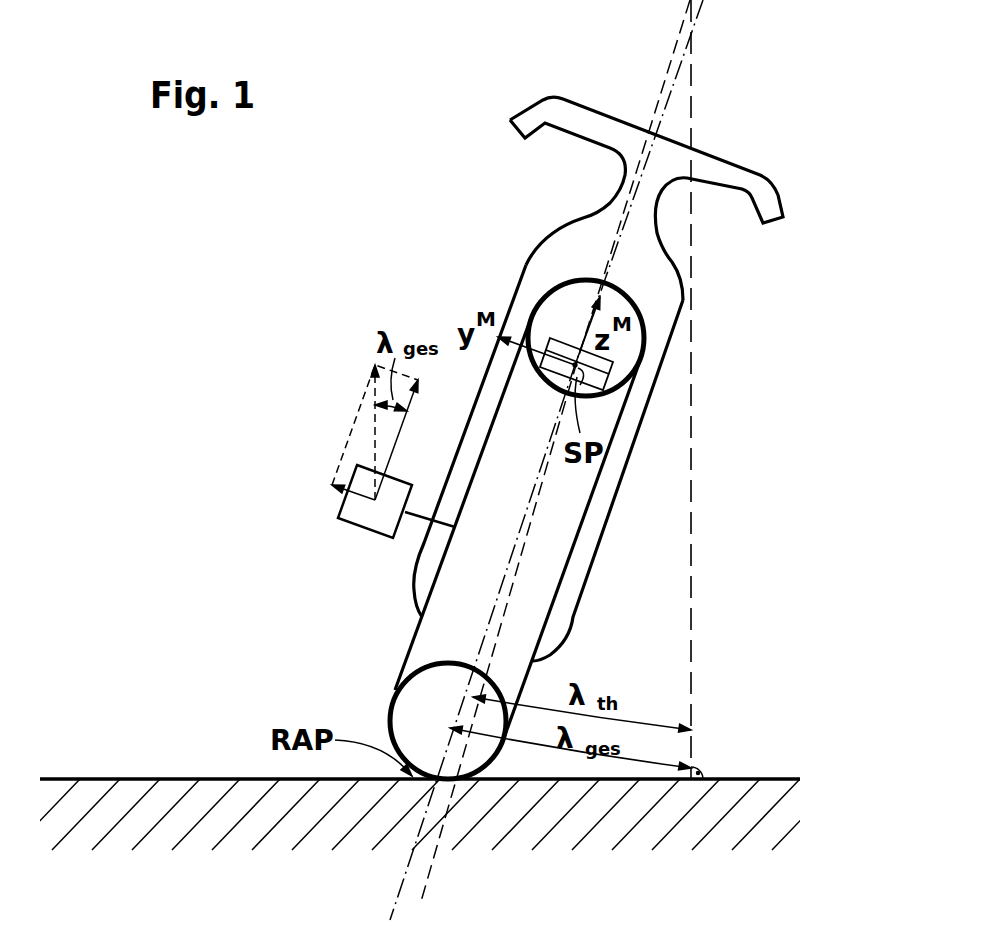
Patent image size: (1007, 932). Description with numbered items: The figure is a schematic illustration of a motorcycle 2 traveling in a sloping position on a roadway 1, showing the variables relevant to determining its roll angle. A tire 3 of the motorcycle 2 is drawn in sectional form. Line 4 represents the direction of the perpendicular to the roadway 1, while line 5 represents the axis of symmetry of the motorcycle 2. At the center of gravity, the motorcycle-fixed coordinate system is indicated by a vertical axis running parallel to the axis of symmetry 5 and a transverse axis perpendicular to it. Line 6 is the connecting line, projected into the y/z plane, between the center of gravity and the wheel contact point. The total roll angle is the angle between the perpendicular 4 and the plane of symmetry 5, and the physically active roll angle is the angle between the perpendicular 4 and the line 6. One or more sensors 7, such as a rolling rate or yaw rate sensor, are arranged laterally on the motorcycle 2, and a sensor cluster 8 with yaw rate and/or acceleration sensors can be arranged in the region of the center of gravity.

The roadway 1 is at (143, 800).
The motorcycle 2 is at (740, 180).
The tire 3 is at (547, 290).
The perpendicular to the roadway 4 is at (693, 617).
The axis of symmetry of the motorcycle 5 is at (702, 13).
The connecting line 6 is at (678, 33).
The sensor 7 is at (362, 540).
The sensor cluster 8 is at (597, 372).